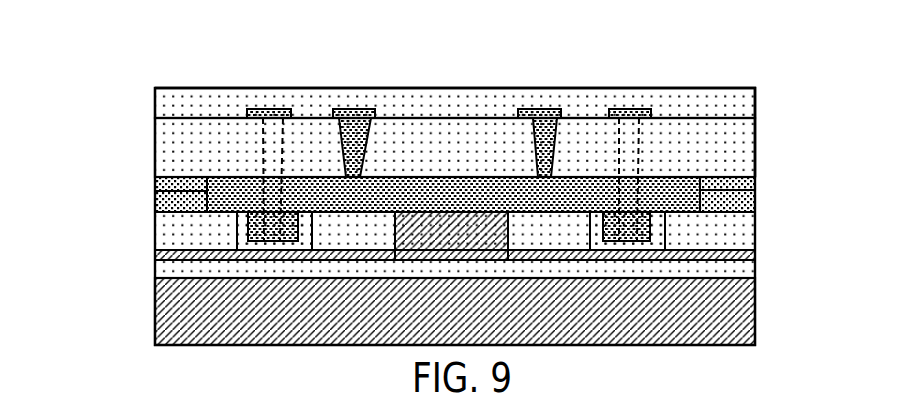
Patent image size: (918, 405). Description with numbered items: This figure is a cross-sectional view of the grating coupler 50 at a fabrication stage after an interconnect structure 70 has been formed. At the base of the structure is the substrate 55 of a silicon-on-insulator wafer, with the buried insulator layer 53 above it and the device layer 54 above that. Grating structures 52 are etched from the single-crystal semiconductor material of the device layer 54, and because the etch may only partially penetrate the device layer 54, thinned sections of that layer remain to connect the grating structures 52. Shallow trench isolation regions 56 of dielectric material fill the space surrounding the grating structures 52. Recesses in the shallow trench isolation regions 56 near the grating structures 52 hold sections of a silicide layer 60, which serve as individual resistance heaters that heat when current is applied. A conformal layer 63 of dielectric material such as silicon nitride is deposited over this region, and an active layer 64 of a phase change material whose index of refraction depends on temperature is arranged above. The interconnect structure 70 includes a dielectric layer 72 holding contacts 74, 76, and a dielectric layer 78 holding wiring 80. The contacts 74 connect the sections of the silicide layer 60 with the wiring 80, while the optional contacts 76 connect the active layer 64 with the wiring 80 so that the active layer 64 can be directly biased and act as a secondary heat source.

The grating coupler 50 is at (122, 126).
The interconnect structure 70 is at (761, 136).
The dielectric layer 78 is at (727, 103).
The dielectric layer 72 is at (170, 150).
The conformal layer 63 is at (730, 183).
The shallow trench isolation regions 56 is at (170, 199).
The silicide layer 60 is at (262, 242).
The device layer 54 is at (175, 256).
The buried insulator layer 53 is at (730, 273).
The substrate 55 is at (165, 318).
The active layer 64 is at (500, 203).
The grating structures 52 is at (459, 228).
The contacts 74 is at (282, 177).
The contacts 76 is at (350, 118).
The wiring 80 is at (268, 112).